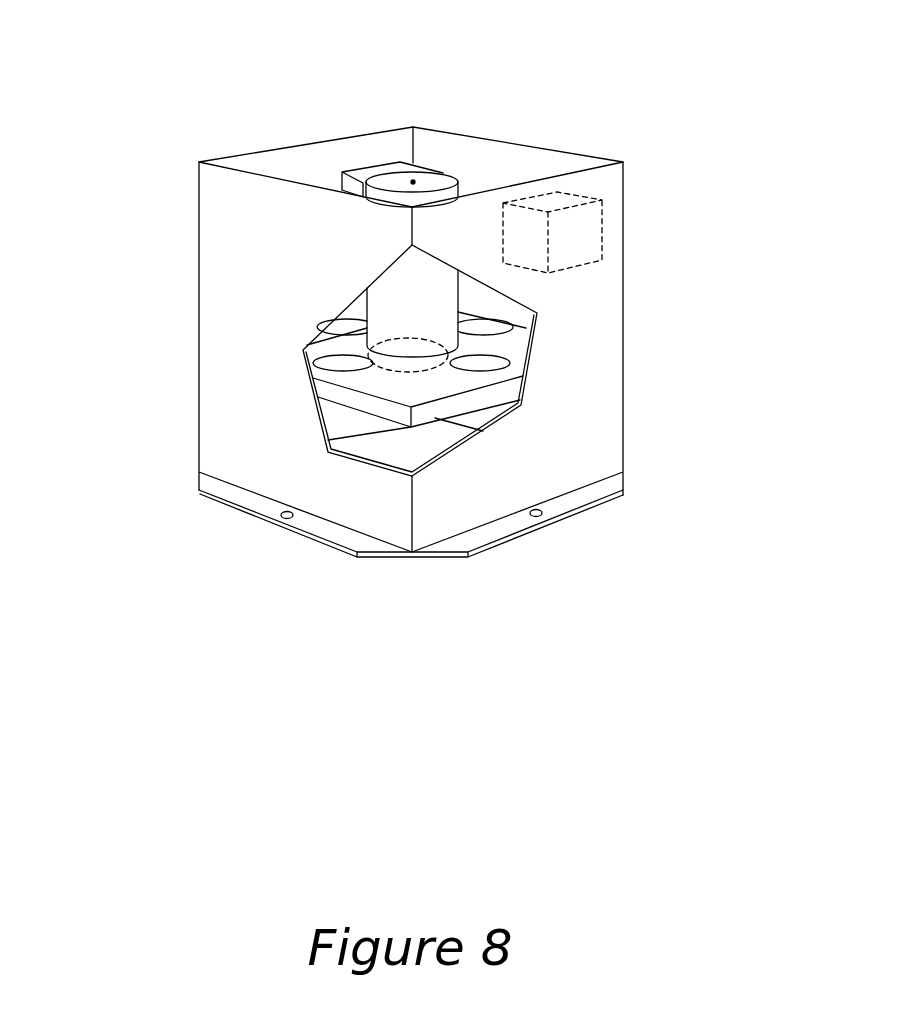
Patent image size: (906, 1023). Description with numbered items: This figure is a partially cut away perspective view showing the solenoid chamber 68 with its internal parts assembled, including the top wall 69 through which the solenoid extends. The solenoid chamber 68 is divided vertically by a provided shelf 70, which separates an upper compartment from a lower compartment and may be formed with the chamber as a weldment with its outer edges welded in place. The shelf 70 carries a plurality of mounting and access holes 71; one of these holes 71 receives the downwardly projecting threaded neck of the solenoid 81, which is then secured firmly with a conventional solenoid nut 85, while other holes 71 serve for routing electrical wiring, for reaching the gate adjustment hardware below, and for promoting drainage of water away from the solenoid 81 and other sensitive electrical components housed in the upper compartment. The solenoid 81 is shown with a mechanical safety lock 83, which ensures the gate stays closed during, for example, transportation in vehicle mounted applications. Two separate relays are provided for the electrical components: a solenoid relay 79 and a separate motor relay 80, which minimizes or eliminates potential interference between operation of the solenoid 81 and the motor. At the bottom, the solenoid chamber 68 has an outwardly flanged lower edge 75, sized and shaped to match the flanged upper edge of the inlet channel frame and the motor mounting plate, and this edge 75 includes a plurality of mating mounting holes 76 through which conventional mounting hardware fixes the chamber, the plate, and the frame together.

The solenoid chamber 68 is at (250, 237).
The housing top wall 69 is at (563, 150).
The provided shelf 70 is at (530, 327).
The mounting and access holes 71 is at (473, 373).
The outwardly flanged lower edge 75 is at (467, 543).
The mating mounting holes 76 is at (545, 503).
The solenoid relay 79 is at (395, 163).
The motor relay 80 is at (575, 238).
The solenoid 81 is at (418, 308).
The mechanical safety lock 83 is at (413, 182).
The solenoid nut 85 is at (407, 368).